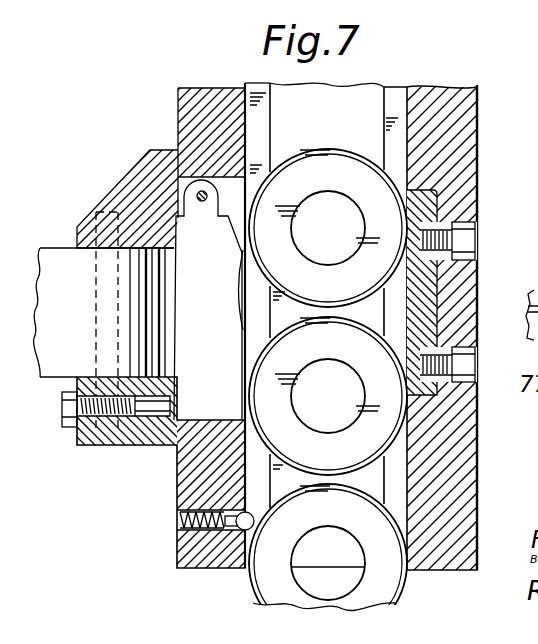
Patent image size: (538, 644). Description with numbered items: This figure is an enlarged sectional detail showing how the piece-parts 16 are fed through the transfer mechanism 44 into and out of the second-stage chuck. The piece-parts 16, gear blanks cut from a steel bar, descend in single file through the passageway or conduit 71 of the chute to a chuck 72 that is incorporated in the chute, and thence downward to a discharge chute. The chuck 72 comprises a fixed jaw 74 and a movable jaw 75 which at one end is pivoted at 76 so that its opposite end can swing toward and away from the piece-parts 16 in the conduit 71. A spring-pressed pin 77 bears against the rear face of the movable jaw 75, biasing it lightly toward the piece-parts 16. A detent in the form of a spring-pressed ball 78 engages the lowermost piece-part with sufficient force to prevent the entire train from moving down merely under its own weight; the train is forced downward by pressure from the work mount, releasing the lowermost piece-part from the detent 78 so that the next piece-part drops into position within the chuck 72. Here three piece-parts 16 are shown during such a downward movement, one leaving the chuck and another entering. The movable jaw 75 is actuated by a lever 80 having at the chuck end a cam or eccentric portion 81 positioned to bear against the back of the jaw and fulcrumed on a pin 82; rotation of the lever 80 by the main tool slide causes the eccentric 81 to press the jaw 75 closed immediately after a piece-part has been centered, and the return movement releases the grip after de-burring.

The piece-part 16 is at (362, 228).
The transfer mechanism 44 is at (482, 189).
The passageway or conduit 71 is at (384, 121).
The chuck 72 is at (481, 265).
The fixed jaw 74 is at (424, 327).
The movable jaw 75 is at (200, 412).
The pivot 76 is at (207, 203).
The spring-pressed pin 77 is at (76, 408).
The spring-pressed ball 78 is at (246, 533).
The lever 80 is at (74, 248).
The cam or eccentric portion 81 is at (172, 320).
The pin 82 is at (96, 300).